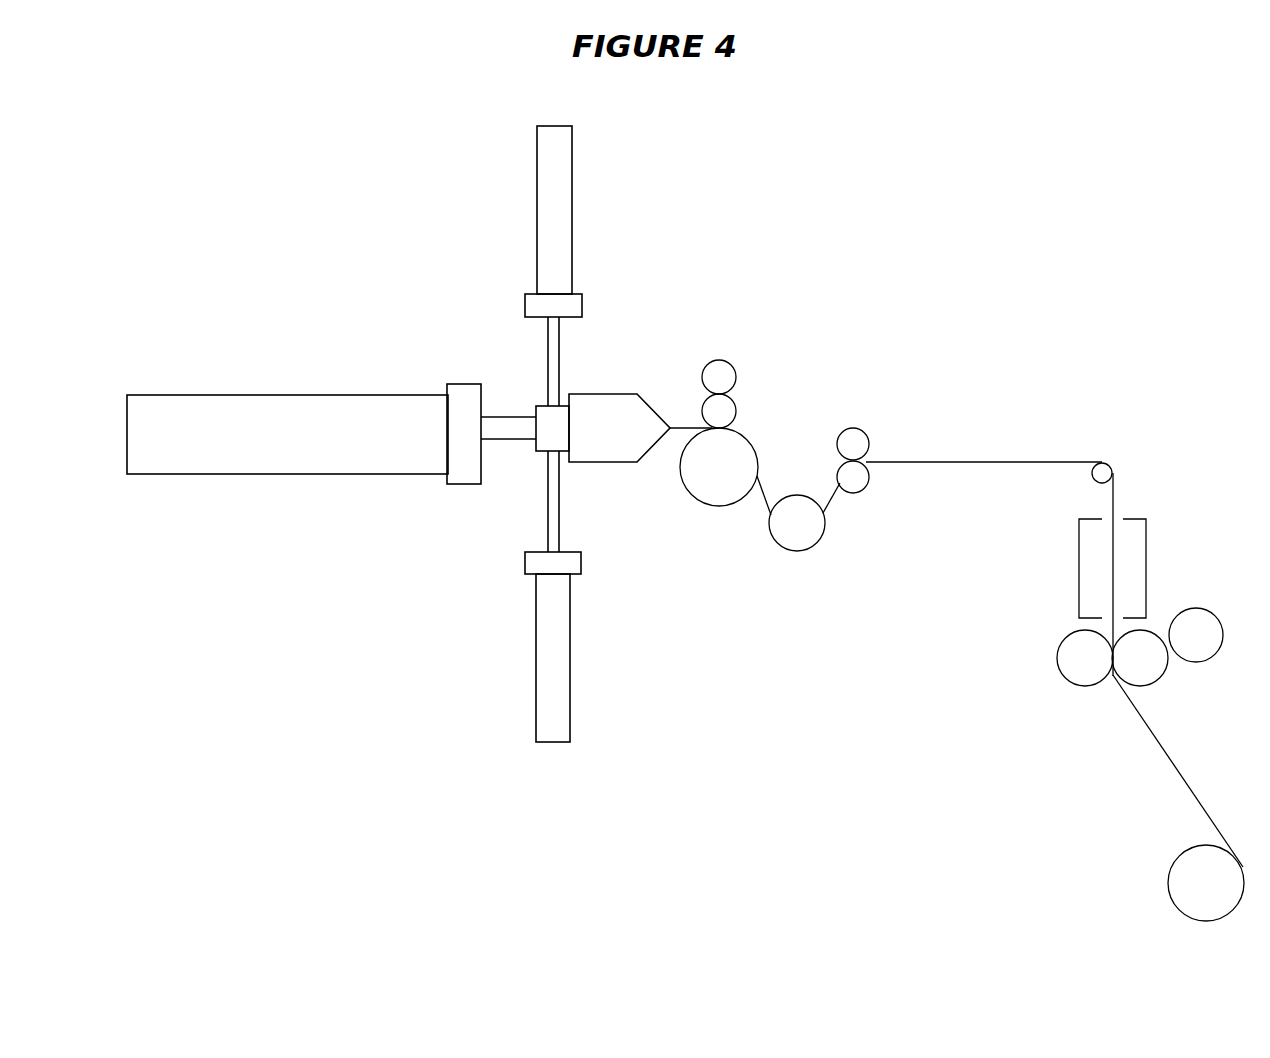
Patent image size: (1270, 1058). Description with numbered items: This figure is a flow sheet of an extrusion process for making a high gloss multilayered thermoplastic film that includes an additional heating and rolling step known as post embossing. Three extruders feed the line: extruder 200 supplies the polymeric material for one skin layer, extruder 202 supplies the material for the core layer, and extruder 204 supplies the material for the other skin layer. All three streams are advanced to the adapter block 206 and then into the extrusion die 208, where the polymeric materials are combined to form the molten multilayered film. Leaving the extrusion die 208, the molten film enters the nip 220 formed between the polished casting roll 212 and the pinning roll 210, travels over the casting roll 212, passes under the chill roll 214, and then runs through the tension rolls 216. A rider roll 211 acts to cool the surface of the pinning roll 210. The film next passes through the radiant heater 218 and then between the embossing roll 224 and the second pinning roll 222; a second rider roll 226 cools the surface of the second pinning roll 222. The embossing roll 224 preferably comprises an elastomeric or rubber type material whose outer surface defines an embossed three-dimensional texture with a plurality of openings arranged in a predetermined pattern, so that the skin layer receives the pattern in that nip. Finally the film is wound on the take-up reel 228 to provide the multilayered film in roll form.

The extruder 200 is at (547, 620).
The extruder 202 is at (293, 430).
The extruder 204 is at (558, 248).
The adapter block 206 is at (549, 430).
The extrusion die 208 is at (617, 426).
The pinning roll 210 is at (731, 405).
The rider roll 211 is at (727, 372).
The polished casting roll 212 is at (724, 477).
The chill roll 214 is at (802, 530).
The tension rolls 216 is at (864, 480).
The radiant heater 218 is at (1137, 548).
The nip 220 is at (700, 432).
The second pinning roll 222 is at (1134, 667).
The embossing roll 224 is at (1079, 665).
The rider roll 226 is at (1205, 645).
The take-up reel 228 is at (1200, 889).